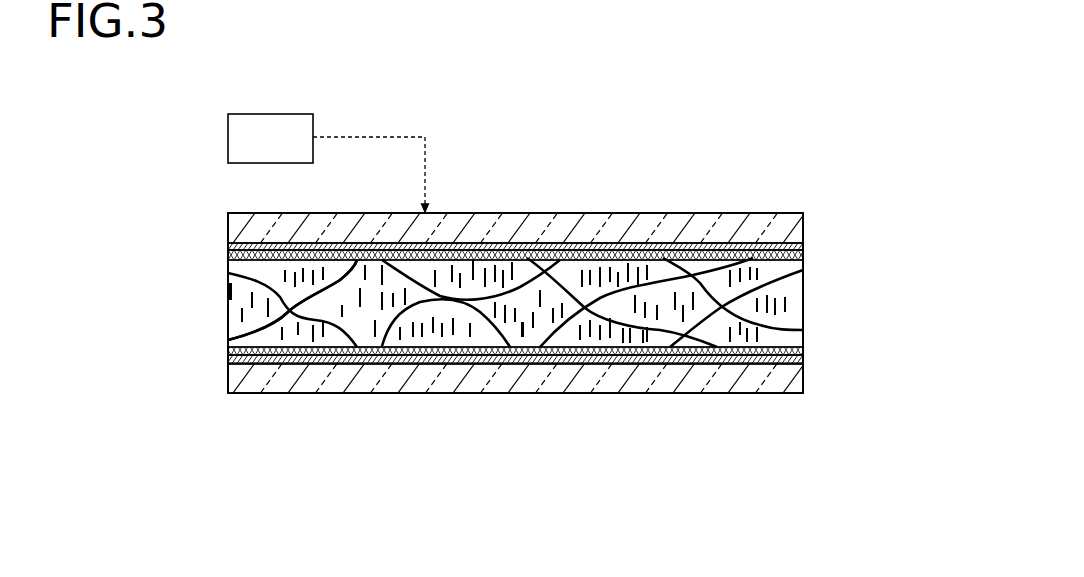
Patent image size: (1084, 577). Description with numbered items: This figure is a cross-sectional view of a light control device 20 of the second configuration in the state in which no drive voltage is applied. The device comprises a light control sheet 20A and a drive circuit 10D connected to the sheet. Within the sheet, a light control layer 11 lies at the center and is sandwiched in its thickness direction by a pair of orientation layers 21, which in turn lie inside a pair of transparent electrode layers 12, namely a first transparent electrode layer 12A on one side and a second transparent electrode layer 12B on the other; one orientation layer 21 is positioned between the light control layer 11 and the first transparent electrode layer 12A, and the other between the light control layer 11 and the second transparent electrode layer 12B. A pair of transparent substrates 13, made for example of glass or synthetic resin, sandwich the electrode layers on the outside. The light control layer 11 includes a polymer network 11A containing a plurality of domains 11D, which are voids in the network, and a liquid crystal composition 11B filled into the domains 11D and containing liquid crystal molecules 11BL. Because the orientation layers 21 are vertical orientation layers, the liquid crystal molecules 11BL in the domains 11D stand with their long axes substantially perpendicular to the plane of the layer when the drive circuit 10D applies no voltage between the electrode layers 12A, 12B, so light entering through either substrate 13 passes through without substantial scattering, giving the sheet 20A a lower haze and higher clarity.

The light control device 20 is at (866, 57).
The light control sheet 20A is at (894, 206).
The drive circuit 10D is at (228, 137).
The transparent substrate 13 is at (805, 230).
The transparent electrode layer 12 is at (515, 303).
The first transparent electrode layer 12A is at (228, 247).
The second transparent electrode layer 12B is at (228, 357).
The orientation layer 21 is at (805, 256).
The light control layer 11 is at (228, 309).
The polymer network 11A is at (337, 262).
The liquid crystal composition 11B is at (567, 334).
The liquid crystal molecule 11BL is at (663, 262).
The domain 11D is at (340, 338).